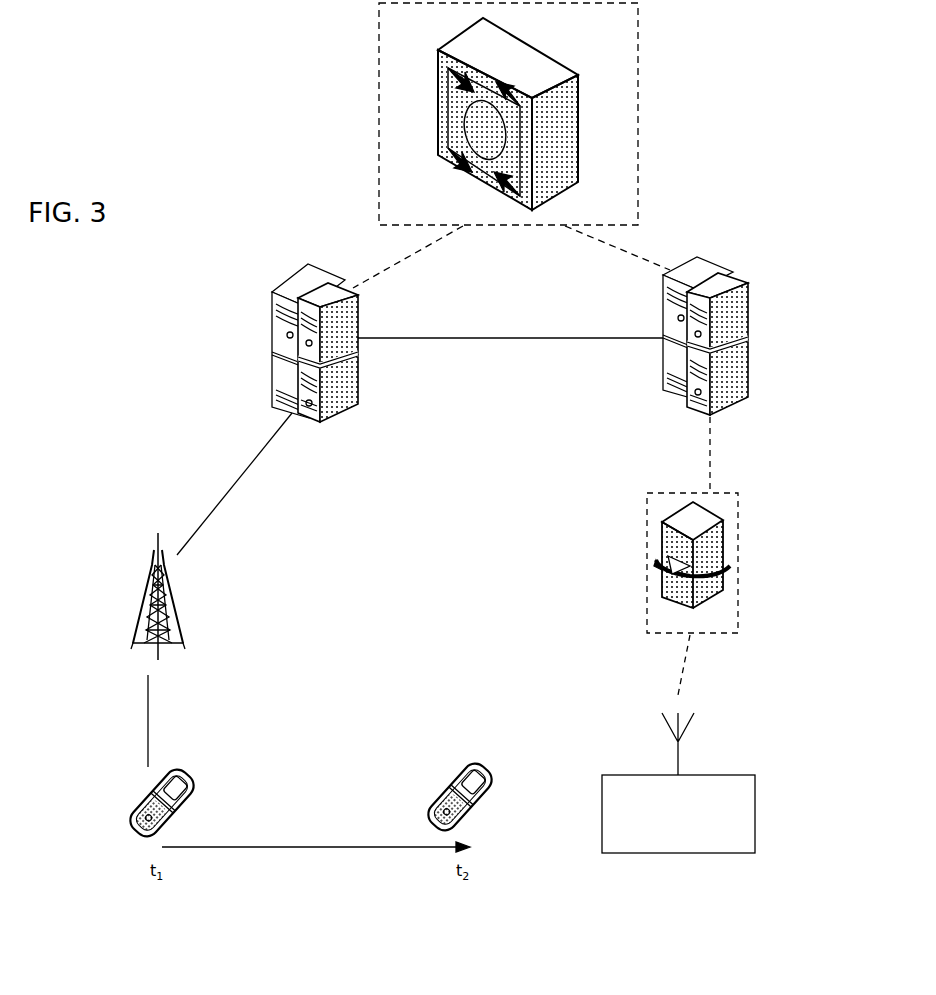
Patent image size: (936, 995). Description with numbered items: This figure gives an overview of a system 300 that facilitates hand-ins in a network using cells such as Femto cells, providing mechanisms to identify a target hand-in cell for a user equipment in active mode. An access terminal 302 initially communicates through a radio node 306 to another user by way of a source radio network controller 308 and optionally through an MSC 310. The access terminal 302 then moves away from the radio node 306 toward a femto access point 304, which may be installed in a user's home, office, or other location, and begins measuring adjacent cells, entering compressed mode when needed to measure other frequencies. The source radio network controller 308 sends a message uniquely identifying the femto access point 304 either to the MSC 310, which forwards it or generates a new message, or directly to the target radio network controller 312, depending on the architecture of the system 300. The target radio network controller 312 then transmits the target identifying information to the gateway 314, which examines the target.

The system 300 is at (845, 219).
The access terminal 302 is at (291, 800).
The femto access point 304 is at (678, 783).
The radio node 306 is at (181, 596).
The source radio network controller 308 is at (325, 352).
The MSC 310 is at (508, 114).
The target radio network controller 312 is at (696, 339).
The gateway 314 is at (692, 563).